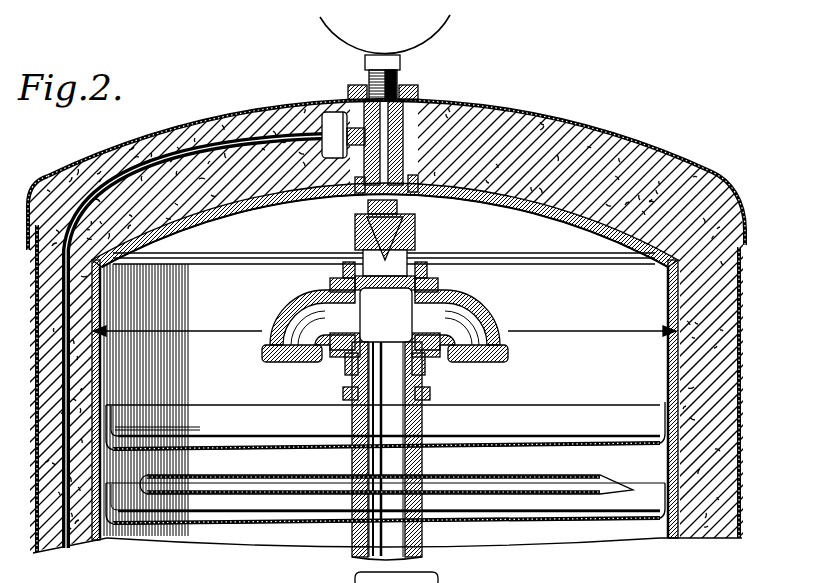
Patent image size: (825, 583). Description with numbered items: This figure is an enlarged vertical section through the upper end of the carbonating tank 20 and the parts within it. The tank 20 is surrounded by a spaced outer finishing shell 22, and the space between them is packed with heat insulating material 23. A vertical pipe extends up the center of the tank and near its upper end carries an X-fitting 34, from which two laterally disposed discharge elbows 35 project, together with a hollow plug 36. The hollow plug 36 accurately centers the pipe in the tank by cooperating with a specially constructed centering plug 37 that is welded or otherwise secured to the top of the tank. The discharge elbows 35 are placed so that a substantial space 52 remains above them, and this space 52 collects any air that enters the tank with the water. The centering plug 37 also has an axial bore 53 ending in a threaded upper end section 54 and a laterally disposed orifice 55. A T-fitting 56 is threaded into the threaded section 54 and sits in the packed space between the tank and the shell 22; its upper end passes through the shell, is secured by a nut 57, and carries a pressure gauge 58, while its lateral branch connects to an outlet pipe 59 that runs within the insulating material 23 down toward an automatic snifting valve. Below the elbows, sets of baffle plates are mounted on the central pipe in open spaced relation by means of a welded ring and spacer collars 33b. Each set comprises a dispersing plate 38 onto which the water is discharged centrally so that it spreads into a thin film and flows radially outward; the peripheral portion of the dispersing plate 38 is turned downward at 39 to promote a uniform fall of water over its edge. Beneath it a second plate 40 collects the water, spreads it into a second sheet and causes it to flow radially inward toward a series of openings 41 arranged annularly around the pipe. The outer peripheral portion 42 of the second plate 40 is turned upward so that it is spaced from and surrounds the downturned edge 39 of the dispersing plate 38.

The carbonating tank 20 is at (672, 373).
The outer finishing shell 22 is at (549, 112).
The heat insulating material 23 is at (62, 181).
The spacer collars 33b is at (420, 415).
The X-fitting 34 is at (385, 318).
The discharge elbows 35 is at (270, 333).
The hollow plug 36 is at (421, 257).
The centering plug 37 is at (413, 243).
The dispersing plate 38 is at (527, 470).
The downwardly turned peripheral portion 39 is at (634, 488).
The second plate 40 is at (620, 524).
The openings 41 is at (455, 534).
The outer peripheral portion 42 is at (666, 488).
The space 52 is at (620, 141).
The axial bore 53 is at (357, 225).
The threaded upper end section 54 is at (433, 199).
The laterally disposed orifice 55 is at (366, 204).
The T-fitting 56 is at (419, 100).
The nut 57 is at (353, 86).
The pressure gauge 58 is at (448, 18).
The outlet pipe 59 is at (265, 131).